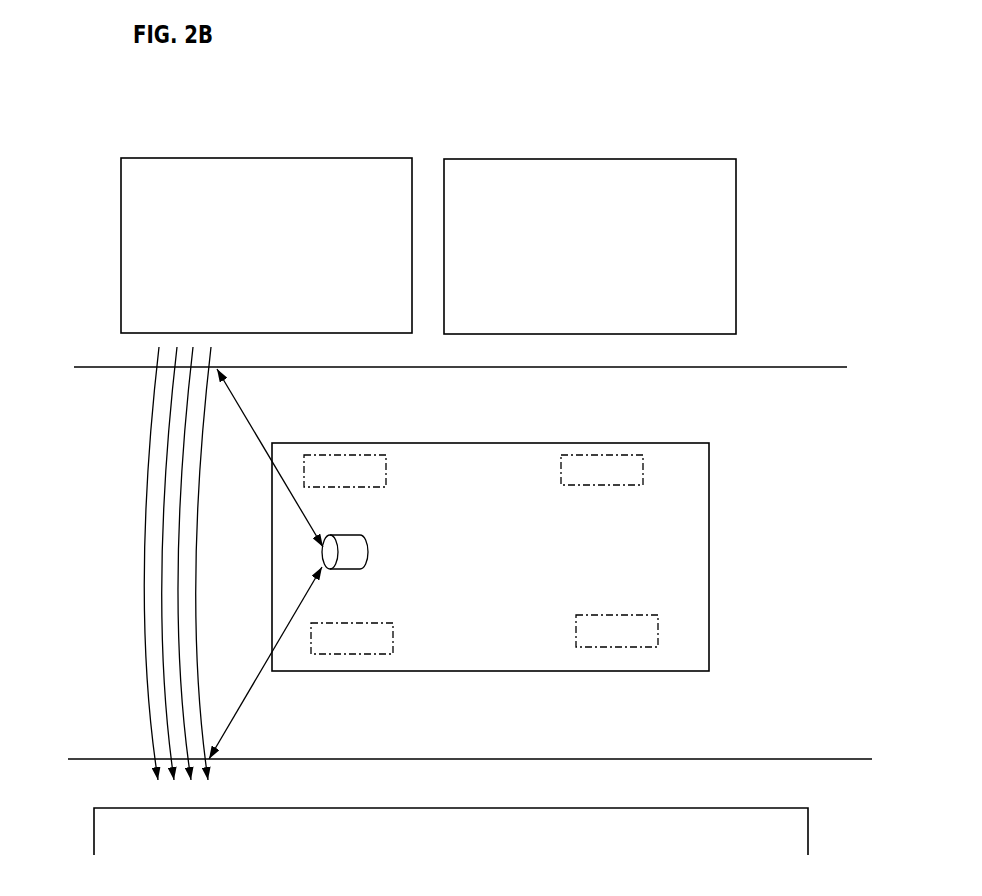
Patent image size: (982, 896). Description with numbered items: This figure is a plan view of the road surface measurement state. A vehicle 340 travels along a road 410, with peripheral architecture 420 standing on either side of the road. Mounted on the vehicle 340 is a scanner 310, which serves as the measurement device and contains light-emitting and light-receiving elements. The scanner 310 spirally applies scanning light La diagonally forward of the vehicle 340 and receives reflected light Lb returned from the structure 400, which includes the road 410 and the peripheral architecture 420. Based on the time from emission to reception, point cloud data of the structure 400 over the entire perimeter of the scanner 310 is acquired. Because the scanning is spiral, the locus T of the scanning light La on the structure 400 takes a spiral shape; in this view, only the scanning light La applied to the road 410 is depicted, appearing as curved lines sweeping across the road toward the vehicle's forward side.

The structure 400 is at (482, 464).
The peripheral architecture 420 is at (247, 158).
The road 410 is at (89, 708).
The vehicle 340 is at (663, 457).
The scanner 310 is at (352, 535).
The scanning light La is at (261, 442).
The reflected light Lb is at (265, 663).
The locus T is at (197, 533).